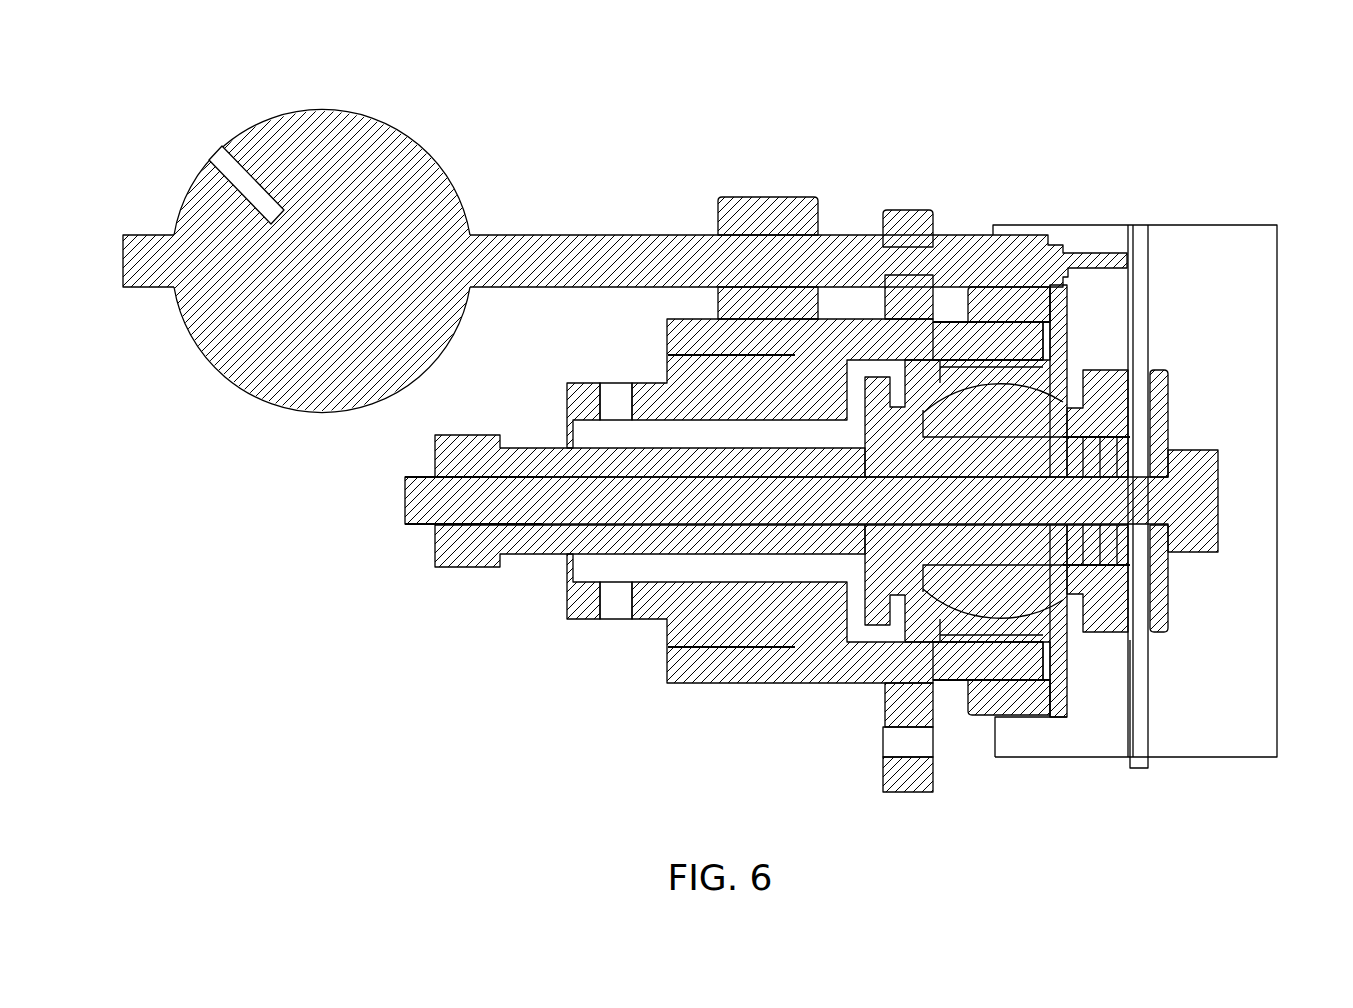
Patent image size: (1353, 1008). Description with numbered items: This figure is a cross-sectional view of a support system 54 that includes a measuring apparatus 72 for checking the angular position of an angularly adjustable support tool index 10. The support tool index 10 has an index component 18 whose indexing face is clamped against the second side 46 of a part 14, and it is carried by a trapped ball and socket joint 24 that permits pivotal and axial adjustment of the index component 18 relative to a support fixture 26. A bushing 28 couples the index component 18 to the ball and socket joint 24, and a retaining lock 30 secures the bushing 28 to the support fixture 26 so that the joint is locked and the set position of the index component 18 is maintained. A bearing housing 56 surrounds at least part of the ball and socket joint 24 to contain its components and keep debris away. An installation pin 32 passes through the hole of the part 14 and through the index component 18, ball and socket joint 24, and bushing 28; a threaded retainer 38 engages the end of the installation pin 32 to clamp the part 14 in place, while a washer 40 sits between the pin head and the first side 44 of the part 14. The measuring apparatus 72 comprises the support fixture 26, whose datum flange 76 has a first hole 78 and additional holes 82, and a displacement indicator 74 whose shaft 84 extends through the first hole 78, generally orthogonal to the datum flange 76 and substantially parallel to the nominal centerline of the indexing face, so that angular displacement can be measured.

The support tool index 10 is at (827, 454).
The part 14 is at (1204, 291).
The index component 18 is at (1105, 640).
The ball and socket joint 24 is at (1034, 352).
The support fixture 26 is at (707, 685).
The bushing 28 is at (885, 570).
The retaining lock 30 is at (582, 610).
The installation pin 32 is at (408, 503).
The retainer 38 is at (472, 570).
The washer 40 is at (1160, 388).
The first side 44 is at (1150, 290).
The second side 46 is at (1127, 298).
The support system 54 is at (1135, 397).
The bearing housing 56 is at (1025, 713).
The measuring apparatus 72 is at (625, 219).
The displacement indicator 74 is at (374, 155).
The datum flange 76 is at (907, 785).
The first hole 78 is at (892, 252).
The additional holes 82 is at (912, 745).
The shaft 84 is at (757, 250).